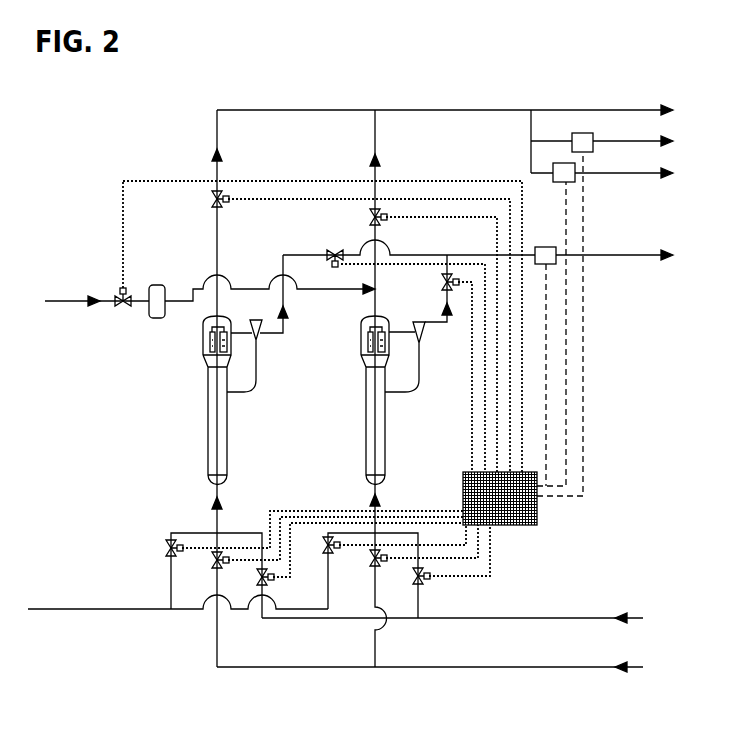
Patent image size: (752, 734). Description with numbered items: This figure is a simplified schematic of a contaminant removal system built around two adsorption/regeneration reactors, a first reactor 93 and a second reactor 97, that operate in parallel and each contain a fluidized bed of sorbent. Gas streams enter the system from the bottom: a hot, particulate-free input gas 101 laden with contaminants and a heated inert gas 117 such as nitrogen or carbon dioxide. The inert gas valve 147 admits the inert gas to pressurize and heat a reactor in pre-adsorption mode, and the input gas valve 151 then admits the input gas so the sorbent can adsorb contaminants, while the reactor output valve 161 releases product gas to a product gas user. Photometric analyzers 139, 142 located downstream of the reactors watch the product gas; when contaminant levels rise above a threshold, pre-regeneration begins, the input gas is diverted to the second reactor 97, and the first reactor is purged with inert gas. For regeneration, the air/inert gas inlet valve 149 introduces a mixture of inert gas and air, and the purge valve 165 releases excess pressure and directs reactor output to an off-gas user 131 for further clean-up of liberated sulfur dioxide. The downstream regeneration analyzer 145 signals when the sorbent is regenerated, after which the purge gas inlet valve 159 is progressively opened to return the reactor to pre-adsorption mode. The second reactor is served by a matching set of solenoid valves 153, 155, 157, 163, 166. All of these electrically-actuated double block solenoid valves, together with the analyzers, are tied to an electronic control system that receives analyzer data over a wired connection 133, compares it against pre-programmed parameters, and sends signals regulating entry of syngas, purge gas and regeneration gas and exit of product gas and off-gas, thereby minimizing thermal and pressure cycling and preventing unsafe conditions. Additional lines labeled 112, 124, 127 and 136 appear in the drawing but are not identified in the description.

The first reactor 93 is at (208, 438).
The second reactor 97 is at (366, 438).
The particulate-free input gas 101 is at (590, 618).
The return line 112 is at (592, 667).
The heated inert gas 117 is at (64, 609).
The gas inlet line 124 is at (80, 301).
The product outlet line 127 is at (590, 110).
The off-gas user 131 is at (650, 255).
The wired connection 133 is at (588, 425).
The valve control lines 136 is at (473, 425).
The photometric analyzer 139 is at (596, 140).
The photometric analyzer 142 is at (578, 172).
The downstream regeneration analyzer 145 is at (545, 247).
The inert gas valve 147 is at (166, 548).
The air/inert gas inlet valve 149 is at (213, 558).
The input gas valve 151 is at (270, 580).
The solenoid valve 153 is at (333, 550).
The solenoid valve 155 is at (380, 562).
The solenoid valve 157 is at (540, 520).
The purge gas inlet valve 159 is at (121, 308).
The reactor output valve 161 is at (212, 201).
The solenoid valve 163 is at (370, 219).
The purge valve 165 is at (335, 249).
The solenoid valve 166 is at (442, 284).